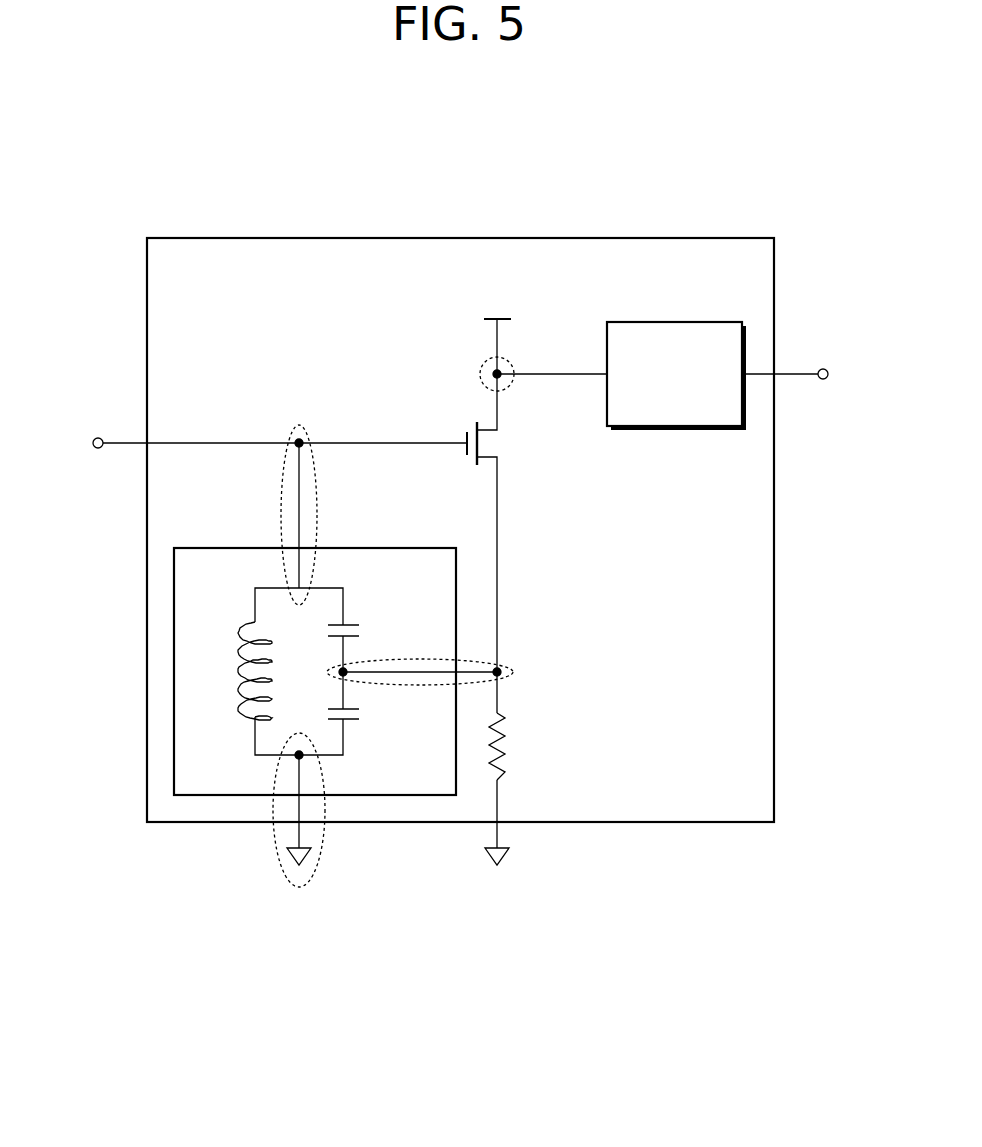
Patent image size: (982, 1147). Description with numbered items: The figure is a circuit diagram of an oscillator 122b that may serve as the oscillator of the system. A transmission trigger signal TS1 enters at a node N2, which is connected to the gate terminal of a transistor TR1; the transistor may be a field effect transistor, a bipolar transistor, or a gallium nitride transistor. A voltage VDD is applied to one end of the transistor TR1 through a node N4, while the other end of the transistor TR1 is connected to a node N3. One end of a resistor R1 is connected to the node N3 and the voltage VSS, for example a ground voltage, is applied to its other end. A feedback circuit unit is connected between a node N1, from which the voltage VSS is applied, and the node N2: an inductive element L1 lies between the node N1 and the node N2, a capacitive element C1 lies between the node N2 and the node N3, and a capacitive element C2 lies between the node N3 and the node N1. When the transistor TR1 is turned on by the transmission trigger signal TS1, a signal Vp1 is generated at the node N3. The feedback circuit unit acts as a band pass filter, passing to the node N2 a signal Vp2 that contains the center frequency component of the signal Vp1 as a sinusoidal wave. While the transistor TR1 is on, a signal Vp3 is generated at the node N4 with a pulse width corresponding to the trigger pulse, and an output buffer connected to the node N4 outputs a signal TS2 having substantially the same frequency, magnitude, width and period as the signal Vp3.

The oscillator 122b is at (323, 238).
The transmission trigger signal TS1 is at (256, 443).
The signal TS2 is at (809, 374).
The signal Vp2 is at (277, 498).
The signal Vp1 is at (441, 660).
The signal Vp3 is at (550, 362).
The node N1 is at (300, 887).
The node N2 is at (283, 500).
The node N3 is at (413, 685).
The node N4 is at (480, 374).
The inductive element L1 is at (253, 671).
The capacitive element C1 is at (345, 630).
The capacitive element C2 is at (345, 713).
The resistor R1 is at (512, 726).
The transistor TR1 is at (503, 523).
The voltage VDD is at (497, 333).
The voltage VSS is at (292, 863).